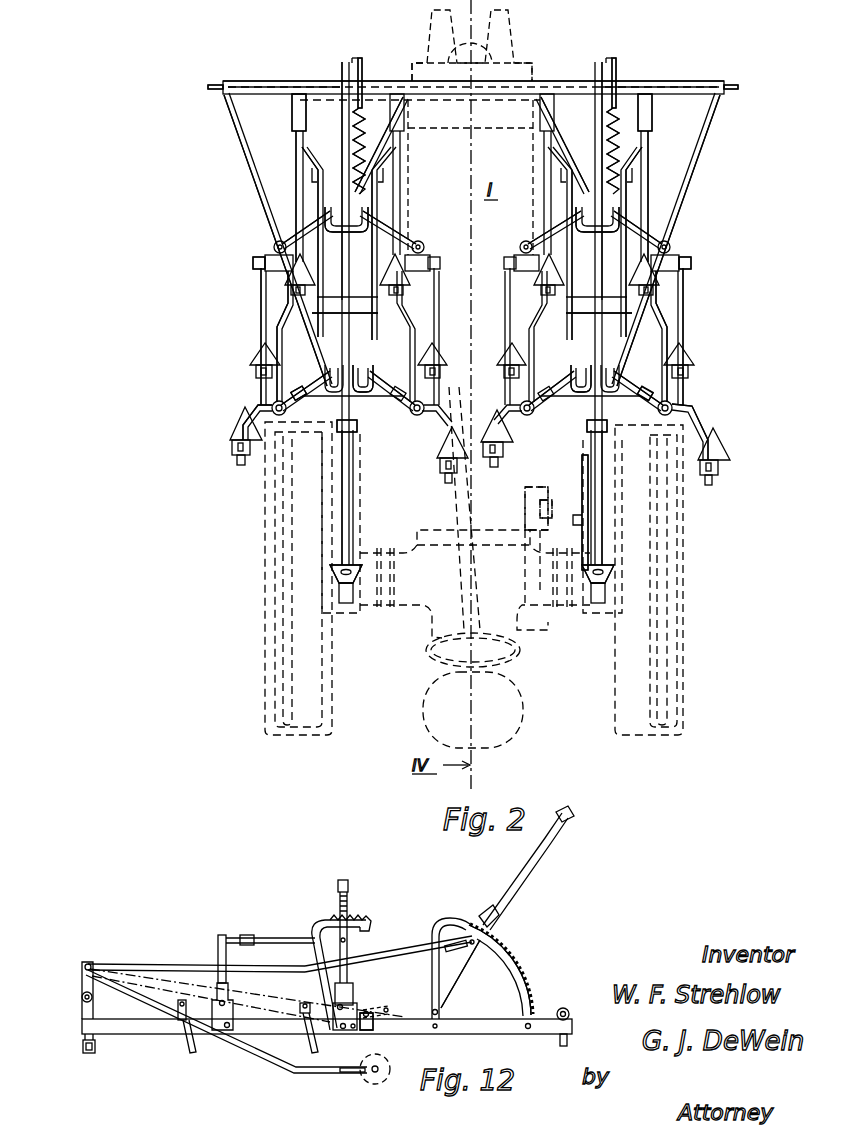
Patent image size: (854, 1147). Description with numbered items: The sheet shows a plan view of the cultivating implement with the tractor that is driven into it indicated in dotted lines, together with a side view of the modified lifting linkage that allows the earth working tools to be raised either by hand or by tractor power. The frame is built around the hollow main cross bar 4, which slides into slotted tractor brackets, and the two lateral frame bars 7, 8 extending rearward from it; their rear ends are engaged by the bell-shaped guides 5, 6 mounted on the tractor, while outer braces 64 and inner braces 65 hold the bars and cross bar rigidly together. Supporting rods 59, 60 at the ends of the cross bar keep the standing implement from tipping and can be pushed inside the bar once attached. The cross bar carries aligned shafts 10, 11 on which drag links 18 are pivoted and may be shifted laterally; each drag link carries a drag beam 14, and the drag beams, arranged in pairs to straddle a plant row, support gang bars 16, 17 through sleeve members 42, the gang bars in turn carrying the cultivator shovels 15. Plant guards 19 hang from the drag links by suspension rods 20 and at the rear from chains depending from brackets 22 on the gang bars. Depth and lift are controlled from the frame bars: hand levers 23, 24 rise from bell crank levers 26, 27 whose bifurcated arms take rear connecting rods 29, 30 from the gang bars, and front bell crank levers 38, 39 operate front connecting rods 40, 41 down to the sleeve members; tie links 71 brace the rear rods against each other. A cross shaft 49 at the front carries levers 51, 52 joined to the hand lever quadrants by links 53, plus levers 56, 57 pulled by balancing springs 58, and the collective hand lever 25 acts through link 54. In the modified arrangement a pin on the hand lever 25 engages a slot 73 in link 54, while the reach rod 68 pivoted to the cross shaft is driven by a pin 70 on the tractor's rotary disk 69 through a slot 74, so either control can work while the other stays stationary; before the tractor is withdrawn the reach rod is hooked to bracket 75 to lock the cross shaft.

In FIG. 2, the main cross bar 4 is at (268, 87).
In FIG. 2, the bell-shaped guide 5 is at (342, 583).
In FIG. 2, the bell-shaped guide 6 is at (610, 572).
In FIG. 2, the lateral frame bar 7 is at (355, 516).
In FIG. 2, the lateral frame bar 8 is at (604, 500).
In FIG. 2, the shaft 10 is at (265, 90).
In FIG. 2, the shaft 11 is at (680, 92).
In FIG. 2, the drag beam 14 is at (296, 186).
In FIG. 2, the cultivator shovel 15 is at (233, 442).
In FIG. 2, the gang bar 16 is at (286, 316).
In FIG. 2, the gang bar 17 is at (260, 318).
In FIG. 2, the drag link 18 is at (292, 125).
In FIG. 2, the plant guard 19 is at (375, 341).
In FIG. 2, the suspension rod 20 is at (317, 158).
In FIG. 2, the bracket 22 is at (343, 313).
In FIG. 2, the hand lever 23 is at (359, 426).
In FIG. 2, the hand lever 24 is at (586, 426).
In FIG. 2, the hand lever 25 is at (580, 517).
In FIG. 12, the hand lever 25 is at (569, 822).
In FIG. 2, the bell crank lever 26 is at (372, 372).
In FIG. 2, the bell crank lever 27 is at (622, 374).
In FIG. 2, the rear connecting rod 29 is at (322, 380).
In FIG. 2, the rear connecting rod 30 is at (381, 386).
In FIG. 2, the bell crank lever 38 is at (355, 233).
In FIG. 2, the bell crank lever 39 is at (622, 222).
In FIG. 2, the front connecting rod 40 is at (285, 244).
In FIG. 2, the front connecting rod 41 is at (417, 243).
In FIG. 2, the sleeve member 42 is at (268, 272).
In FIG. 2, the cross shaft 49 is at (500, 94).
In FIG. 2, the lever 51 is at (341, 80).
In FIG. 2, the lever 52 is at (600, 80).
In FIG. 12, the link 53 is at (168, 965).
In FIG. 12, the link 54 is at (398, 956).
In FIG. 2, the lever 56 is at (359, 58).
In FIG. 2, the lever 57 is at (614, 58).
In FIG. 2, the balancing spring 58 is at (364, 124).
In FIG. 2, the supporting rod 59 is at (214, 85).
In FIG. 2, the supporting rod 60 is at (737, 85).
In FIG. 2, the outer brace 64 is at (258, 188).
In FIG. 2, the inner brace 65 is at (381, 152).
In FIG. 12, the reach rod 68 is at (253, 1047).
In FIG. 2, the rotary disk 69 is at (537, 485).
In FIG. 12, the rotary disk 69 is at (383, 1082).
In FIG. 2, the pin 70 is at (552, 498).
In FIG. 2, the tie link 71 is at (313, 398).
In FIG. 12, the slot 73 is at (462, 950).
In FIG. 12, the slot 74 is at (352, 1072).
In FIG. 12, the bracket 75 is at (368, 1030).